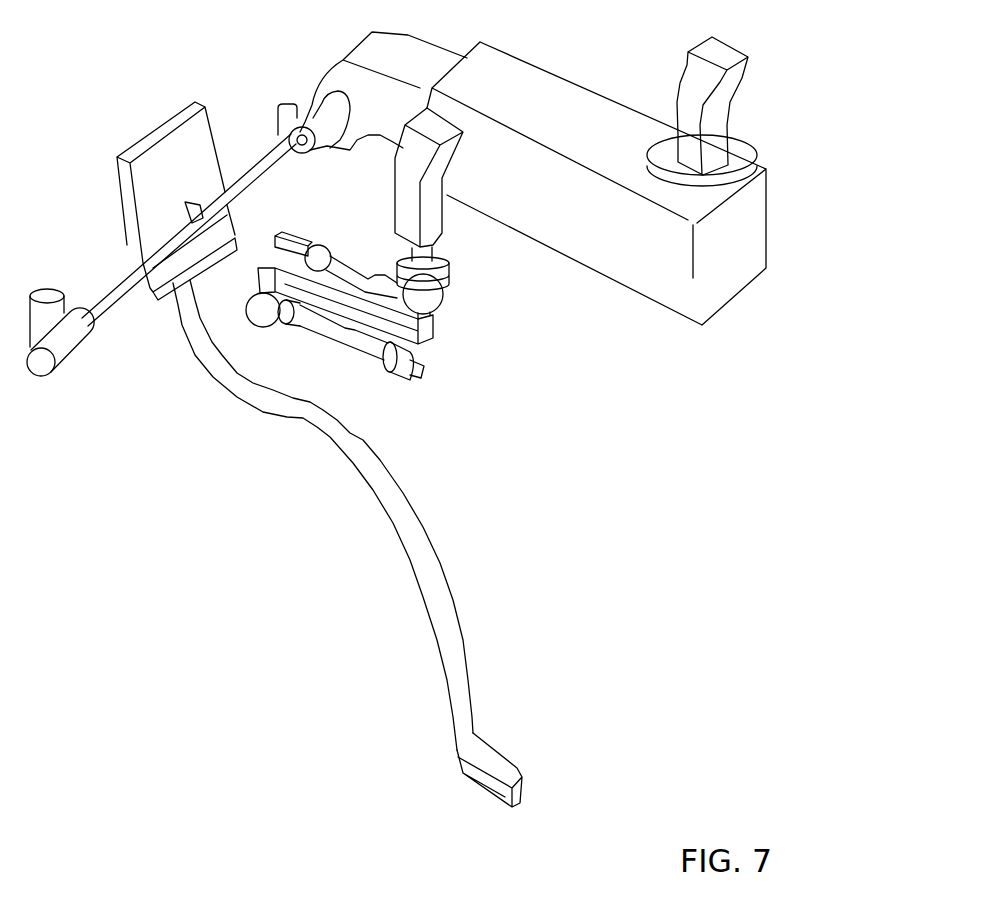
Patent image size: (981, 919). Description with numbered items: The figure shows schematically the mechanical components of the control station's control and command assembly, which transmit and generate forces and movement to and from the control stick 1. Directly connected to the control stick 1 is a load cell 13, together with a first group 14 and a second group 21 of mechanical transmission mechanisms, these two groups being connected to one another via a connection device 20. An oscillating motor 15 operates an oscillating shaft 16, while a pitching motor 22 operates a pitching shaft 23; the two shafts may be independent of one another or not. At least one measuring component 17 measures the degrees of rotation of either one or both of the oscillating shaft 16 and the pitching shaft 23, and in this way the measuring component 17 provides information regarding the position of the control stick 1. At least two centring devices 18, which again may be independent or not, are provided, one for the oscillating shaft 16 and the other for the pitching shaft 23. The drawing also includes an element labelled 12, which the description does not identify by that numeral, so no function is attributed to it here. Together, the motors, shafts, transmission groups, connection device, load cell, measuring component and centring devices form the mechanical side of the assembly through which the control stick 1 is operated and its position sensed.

The control stick 1 is at (720, 115).
The pedal arm 12 is at (443, 647).
The load cell 13 is at (452, 275).
The first group of mechanical transmission mechanisms 14 is at (430, 300).
The oscillating motor 15 is at (357, 258).
The oscillating shaft 16 is at (312, 242).
The measuring component 17 is at (277, 251).
The centring device 18 is at (283, 233).
The connection device 20 is at (283, 319).
The second group of mechanical transmission mechanisms 21 is at (260, 308).
The pitching motor 22 is at (323, 327).
The pitching shaft 23 is at (335, 334).